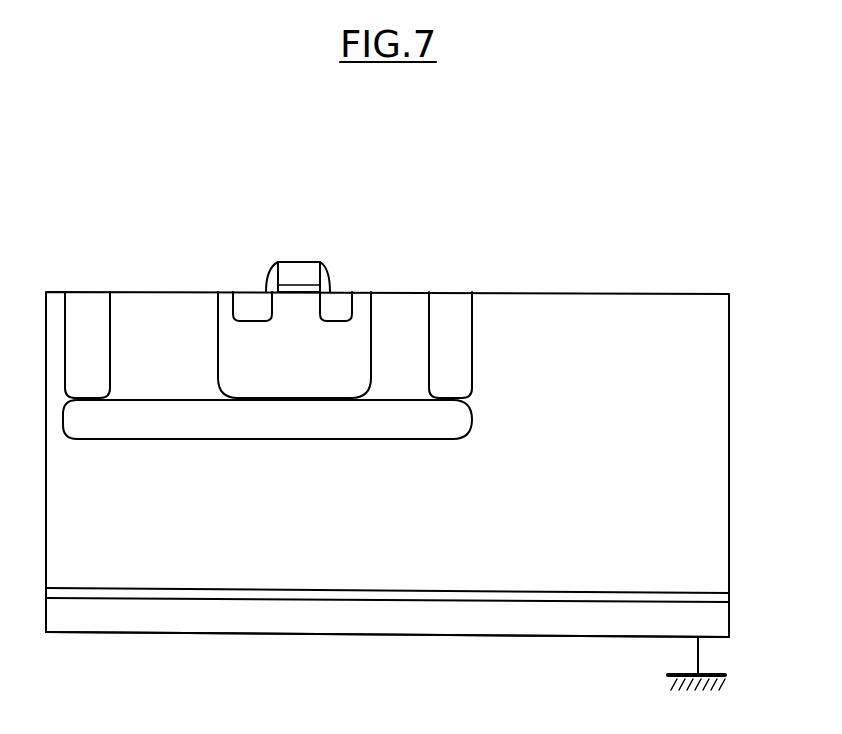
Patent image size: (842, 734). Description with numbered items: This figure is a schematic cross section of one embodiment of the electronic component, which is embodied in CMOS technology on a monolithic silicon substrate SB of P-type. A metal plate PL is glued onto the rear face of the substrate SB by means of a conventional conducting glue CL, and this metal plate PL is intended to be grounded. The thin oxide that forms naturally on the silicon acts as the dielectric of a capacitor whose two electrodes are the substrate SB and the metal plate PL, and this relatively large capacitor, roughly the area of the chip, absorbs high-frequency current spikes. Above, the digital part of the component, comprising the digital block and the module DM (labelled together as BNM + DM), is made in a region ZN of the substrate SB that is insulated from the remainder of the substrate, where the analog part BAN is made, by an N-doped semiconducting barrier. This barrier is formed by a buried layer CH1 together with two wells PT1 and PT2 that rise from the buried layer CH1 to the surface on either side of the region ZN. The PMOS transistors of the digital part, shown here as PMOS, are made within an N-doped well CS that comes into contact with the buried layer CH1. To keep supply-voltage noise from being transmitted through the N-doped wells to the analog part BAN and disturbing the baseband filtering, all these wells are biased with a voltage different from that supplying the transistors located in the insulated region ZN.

The substrate SB is at (410, 528).
The conducting glue CL is at (62, 593).
The metal plate PL is at (123, 614).
The well PT2 is at (88, 309).
The region of the substrate ZN is at (172, 306).
The N-well of PMOS transistor CS is at (356, 330).
The PMOS transistors PMOS is at (309, 248).
The well PT1 is at (456, 316).
The buried layer CH1 is at (452, 422).
The N-type buried layer region BNM is at (432, 202).
The module DM is at (432, 202).
The analog part BAN is at (727, 255).